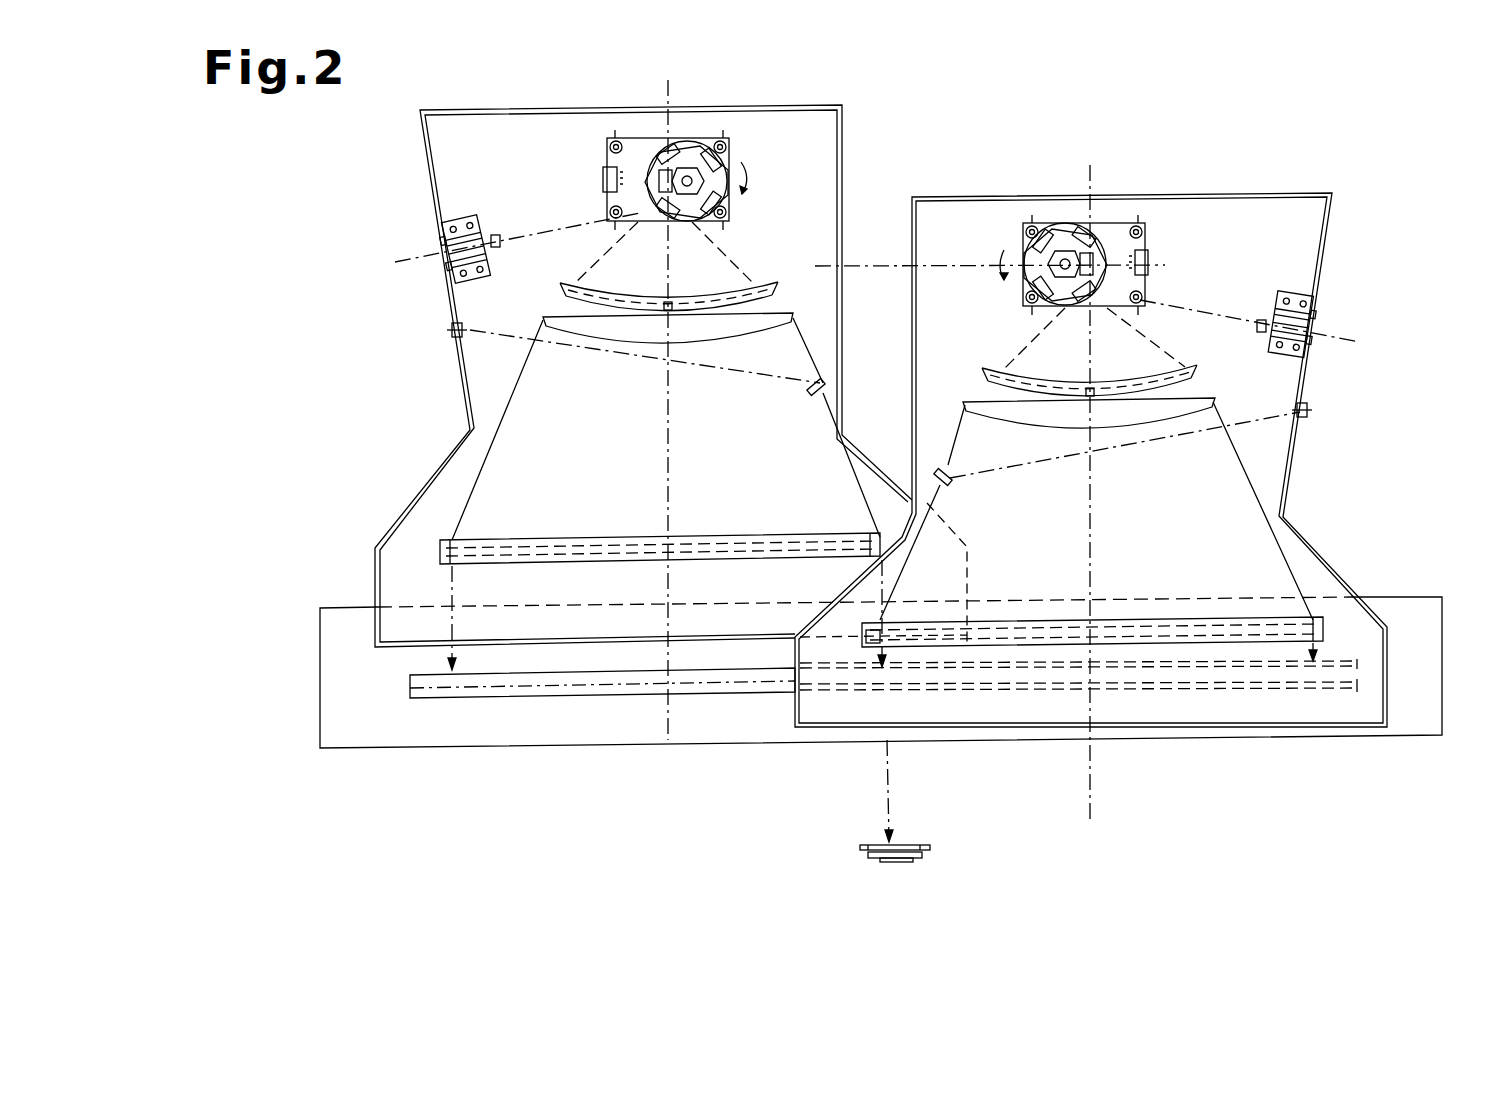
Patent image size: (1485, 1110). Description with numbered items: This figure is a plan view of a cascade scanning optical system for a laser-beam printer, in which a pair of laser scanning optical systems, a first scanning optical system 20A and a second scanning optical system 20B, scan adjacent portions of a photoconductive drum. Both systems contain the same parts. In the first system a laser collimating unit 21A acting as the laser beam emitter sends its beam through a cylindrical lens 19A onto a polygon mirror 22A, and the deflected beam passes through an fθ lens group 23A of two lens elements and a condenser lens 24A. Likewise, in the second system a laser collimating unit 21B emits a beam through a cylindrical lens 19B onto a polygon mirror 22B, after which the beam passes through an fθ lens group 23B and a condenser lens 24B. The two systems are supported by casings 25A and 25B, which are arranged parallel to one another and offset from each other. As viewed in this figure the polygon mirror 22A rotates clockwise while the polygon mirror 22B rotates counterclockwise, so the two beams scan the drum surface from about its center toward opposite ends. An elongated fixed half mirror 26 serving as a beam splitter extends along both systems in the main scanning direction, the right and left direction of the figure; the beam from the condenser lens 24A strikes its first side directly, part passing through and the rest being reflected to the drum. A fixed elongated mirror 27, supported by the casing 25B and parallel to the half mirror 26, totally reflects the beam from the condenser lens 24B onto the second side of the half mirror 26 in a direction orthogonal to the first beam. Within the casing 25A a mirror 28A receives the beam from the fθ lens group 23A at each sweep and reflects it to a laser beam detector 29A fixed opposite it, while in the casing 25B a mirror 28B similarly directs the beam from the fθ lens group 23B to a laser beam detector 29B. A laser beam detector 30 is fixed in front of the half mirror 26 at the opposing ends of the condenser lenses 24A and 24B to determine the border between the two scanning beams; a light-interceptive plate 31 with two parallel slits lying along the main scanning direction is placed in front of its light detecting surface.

The cylindrical lens 19A is at (495, 248).
The cylindrical lens 19B is at (1260, 322).
The first scanning optical system 20A is at (457, 423).
The second scanning optical system 20B is at (1340, 276).
The laser collimating unit 21A is at (478, 220).
The laser collimating unit 21B is at (1295, 292).
The polygon mirror 22A is at (720, 168).
The polygon mirror 22B is at (1108, 225).
The fθ lens group 23A is at (789, 268).
The fθ lens group 23B is at (1213, 445).
The condenser lens 24A is at (573, 543).
The condenser lens 24B is at (1112, 628).
The casing 25A is at (823, 200).
The casing 25B is at (1290, 205).
The half mirror 26 is at (640, 687).
The mirror 27 is at (1285, 677).
The mirror 28A is at (815, 397).
The mirror 28B is at (955, 480).
The laser beam detector 29A is at (462, 338).
The laser beam detector 29B is at (1308, 410).
The laser beam detector 30 is at (898, 862).
The light-interceptive plate 31 is at (932, 848).